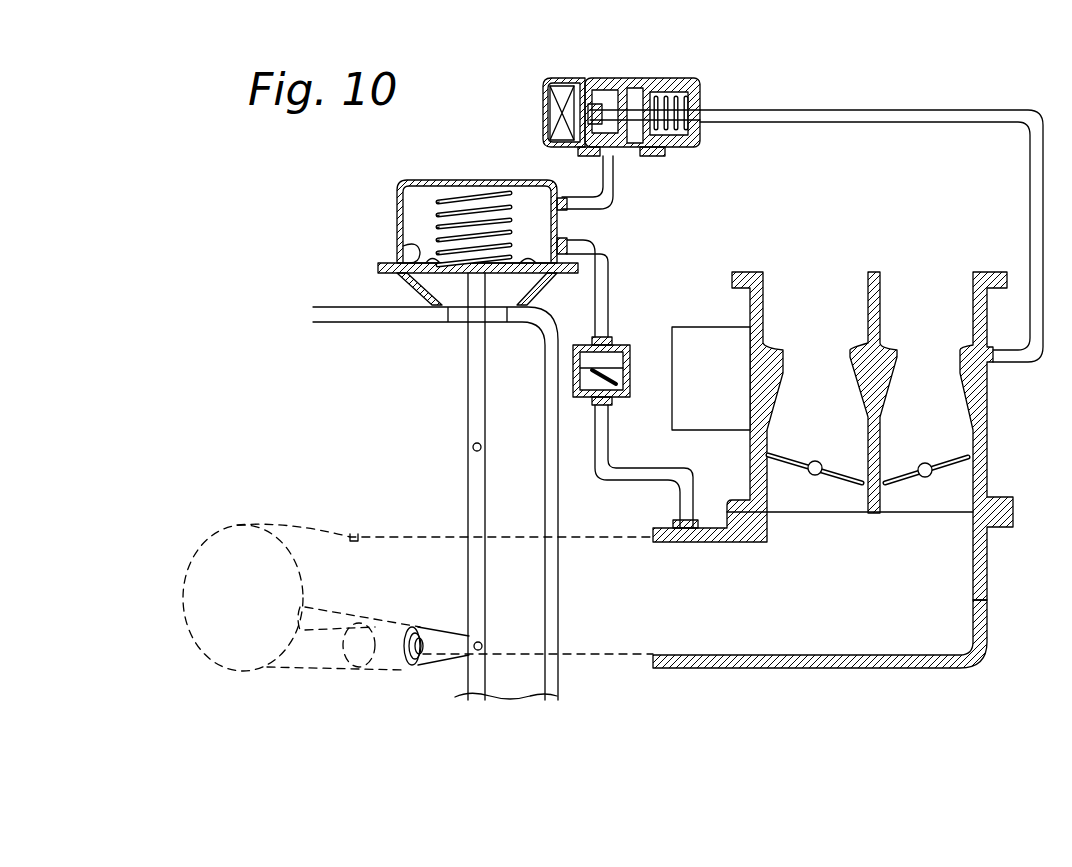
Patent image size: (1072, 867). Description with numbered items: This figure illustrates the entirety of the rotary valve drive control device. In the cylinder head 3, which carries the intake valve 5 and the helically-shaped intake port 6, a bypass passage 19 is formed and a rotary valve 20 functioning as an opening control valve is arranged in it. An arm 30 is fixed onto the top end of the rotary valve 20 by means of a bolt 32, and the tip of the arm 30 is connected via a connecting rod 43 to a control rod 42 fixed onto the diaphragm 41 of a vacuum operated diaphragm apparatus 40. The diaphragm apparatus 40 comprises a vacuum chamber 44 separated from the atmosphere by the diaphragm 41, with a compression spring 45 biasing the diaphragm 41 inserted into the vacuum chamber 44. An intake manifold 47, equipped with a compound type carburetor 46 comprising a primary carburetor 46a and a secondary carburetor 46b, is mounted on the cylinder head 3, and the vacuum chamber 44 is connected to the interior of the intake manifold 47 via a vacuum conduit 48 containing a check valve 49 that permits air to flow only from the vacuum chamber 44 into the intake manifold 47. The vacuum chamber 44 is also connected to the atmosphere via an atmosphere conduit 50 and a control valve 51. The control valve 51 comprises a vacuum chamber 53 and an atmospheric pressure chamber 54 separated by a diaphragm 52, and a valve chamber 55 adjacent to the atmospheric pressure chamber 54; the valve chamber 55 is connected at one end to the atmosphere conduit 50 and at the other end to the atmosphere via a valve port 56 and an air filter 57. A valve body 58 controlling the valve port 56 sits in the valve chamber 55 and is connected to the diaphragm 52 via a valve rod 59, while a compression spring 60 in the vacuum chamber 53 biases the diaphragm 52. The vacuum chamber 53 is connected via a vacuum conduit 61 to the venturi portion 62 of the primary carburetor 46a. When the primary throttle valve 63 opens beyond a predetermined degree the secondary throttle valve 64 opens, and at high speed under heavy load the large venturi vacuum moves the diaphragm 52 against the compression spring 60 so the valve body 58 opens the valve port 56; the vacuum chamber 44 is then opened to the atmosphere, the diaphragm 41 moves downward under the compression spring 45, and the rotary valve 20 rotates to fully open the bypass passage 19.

The cylinder head 3 is at (563, 690).
The intake valve 5 is at (226, 560).
The helically-shaped intake port 6 is at (352, 534).
The bypass passage 19 is at (318, 663).
The rotary valve 20 is at (388, 672).
The arm 30 is at (448, 641).
The bolt 32 is at (418, 636).
The vacuum operated diaphragm apparatus 40 is at (400, 182).
The diaphragm 41 is at (398, 248).
The control rod 42 is at (486, 373).
The connecting rod 43 is at (482, 464).
The vacuum chamber 44 is at (478, 196).
The compression spring 45 is at (442, 214).
The compound type carburetor 46 is at (724, 268).
The primary carburetor 46a is at (921, 270).
The secondary carburetor 46b is at (808, 270).
The intake manifold 47 is at (800, 668).
The vacuum conduit 48 is at (609, 290).
The check valve 49 is at (640, 356).
The atmosphere conduit 50 is at (615, 203).
The control valve 51 is at (588, 76).
The diaphragm 52 is at (668, 88).
The vacuum chamber 53 is at (676, 84).
The atmospheric pressure chamber 54 is at (637, 92).
The valve chamber 55 is at (606, 90).
The valve port 56 is at (583, 82).
The air filter 57 is at (551, 110).
The valve body 58 is at (597, 146).
The valve rod 59 is at (633, 148).
The compression spring 60 is at (693, 144).
The vacuum conduit 61 is at (843, 108).
The venturi portion 62 is at (931, 344).
The primary throttle valve 63 is at (945, 464).
The secondary throttle valve 64 is at (840, 466).